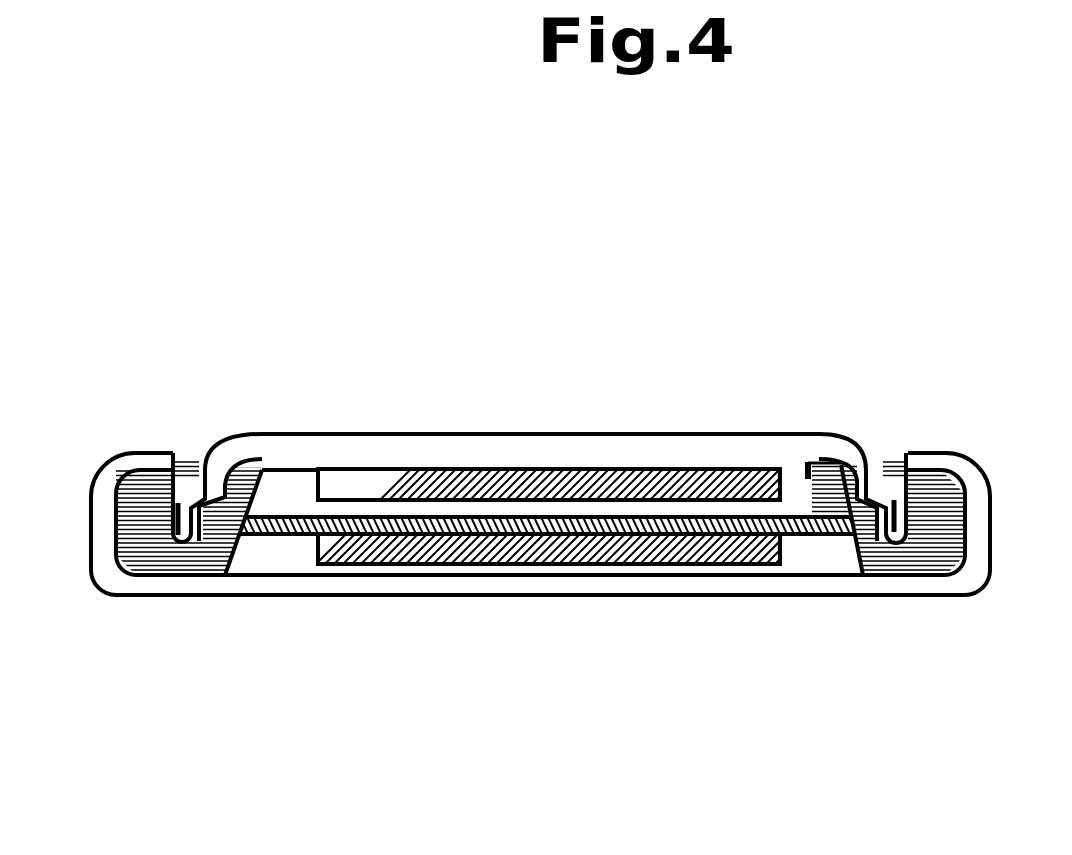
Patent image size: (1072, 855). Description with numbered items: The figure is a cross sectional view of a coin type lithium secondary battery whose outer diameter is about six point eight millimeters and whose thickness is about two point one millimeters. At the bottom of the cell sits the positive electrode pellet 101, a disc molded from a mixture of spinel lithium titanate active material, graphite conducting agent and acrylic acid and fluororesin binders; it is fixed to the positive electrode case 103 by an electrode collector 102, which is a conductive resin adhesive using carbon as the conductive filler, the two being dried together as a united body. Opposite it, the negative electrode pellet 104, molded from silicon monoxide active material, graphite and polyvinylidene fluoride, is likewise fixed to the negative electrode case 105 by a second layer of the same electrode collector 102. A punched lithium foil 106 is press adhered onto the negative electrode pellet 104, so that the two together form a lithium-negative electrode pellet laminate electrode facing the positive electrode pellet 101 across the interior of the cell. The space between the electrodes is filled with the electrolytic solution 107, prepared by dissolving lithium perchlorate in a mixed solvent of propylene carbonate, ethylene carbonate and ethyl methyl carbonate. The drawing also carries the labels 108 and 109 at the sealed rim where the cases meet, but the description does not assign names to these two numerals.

The positive electrode pellet 101 is at (589, 548).
The electrode collector 102 is at (505, 466).
The positive electrode case 103 is at (276, 597).
The negative electrode pellet 104 is at (577, 500).
The negative electrode case 105 is at (341, 456).
The lithium foil 106 is at (315, 511).
The electrolytic solution 107 is at (873, 452).
The left crimp portion 108 is at (183, 457).
The gasket flange 109 is at (819, 476).